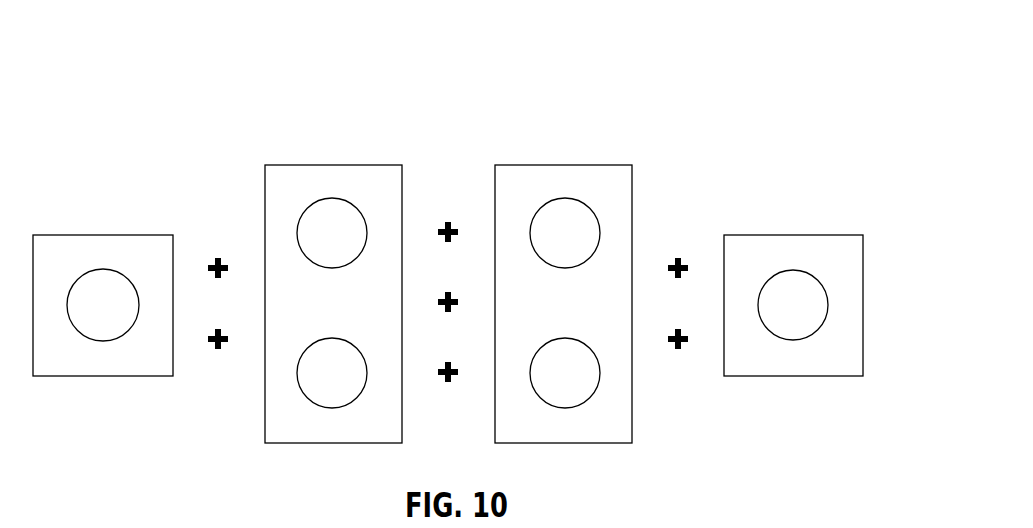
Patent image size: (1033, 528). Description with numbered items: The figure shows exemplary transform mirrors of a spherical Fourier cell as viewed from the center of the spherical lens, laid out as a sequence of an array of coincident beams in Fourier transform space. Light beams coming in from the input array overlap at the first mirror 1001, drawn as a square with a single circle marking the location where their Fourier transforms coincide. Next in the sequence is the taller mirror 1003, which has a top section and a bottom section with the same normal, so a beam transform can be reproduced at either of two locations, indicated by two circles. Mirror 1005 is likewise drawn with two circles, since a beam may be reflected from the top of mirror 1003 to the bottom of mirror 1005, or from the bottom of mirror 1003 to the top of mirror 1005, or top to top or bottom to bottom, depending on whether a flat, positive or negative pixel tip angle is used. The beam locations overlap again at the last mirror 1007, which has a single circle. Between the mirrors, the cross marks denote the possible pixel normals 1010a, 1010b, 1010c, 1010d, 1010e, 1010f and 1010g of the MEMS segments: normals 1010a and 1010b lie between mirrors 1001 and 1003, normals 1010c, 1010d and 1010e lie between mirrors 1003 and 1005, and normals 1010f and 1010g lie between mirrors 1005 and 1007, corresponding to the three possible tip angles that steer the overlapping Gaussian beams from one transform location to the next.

The mirror 1001 is at (120, 234).
The mirror 1003 is at (347, 165).
The mirror 1005 is at (605, 165).
The mirror 1007 is at (835, 234).
The pixel normal 1010a is at (219, 258).
The pixel normal 1010b is at (219, 350).
The pixel normal 1010c is at (448, 222).
The pixel normal 1010d is at (458, 305).
The pixel normal 1010e is at (448, 382).
The pixel normal 1010f is at (678, 258).
The pixel normal 1010g is at (678, 350).